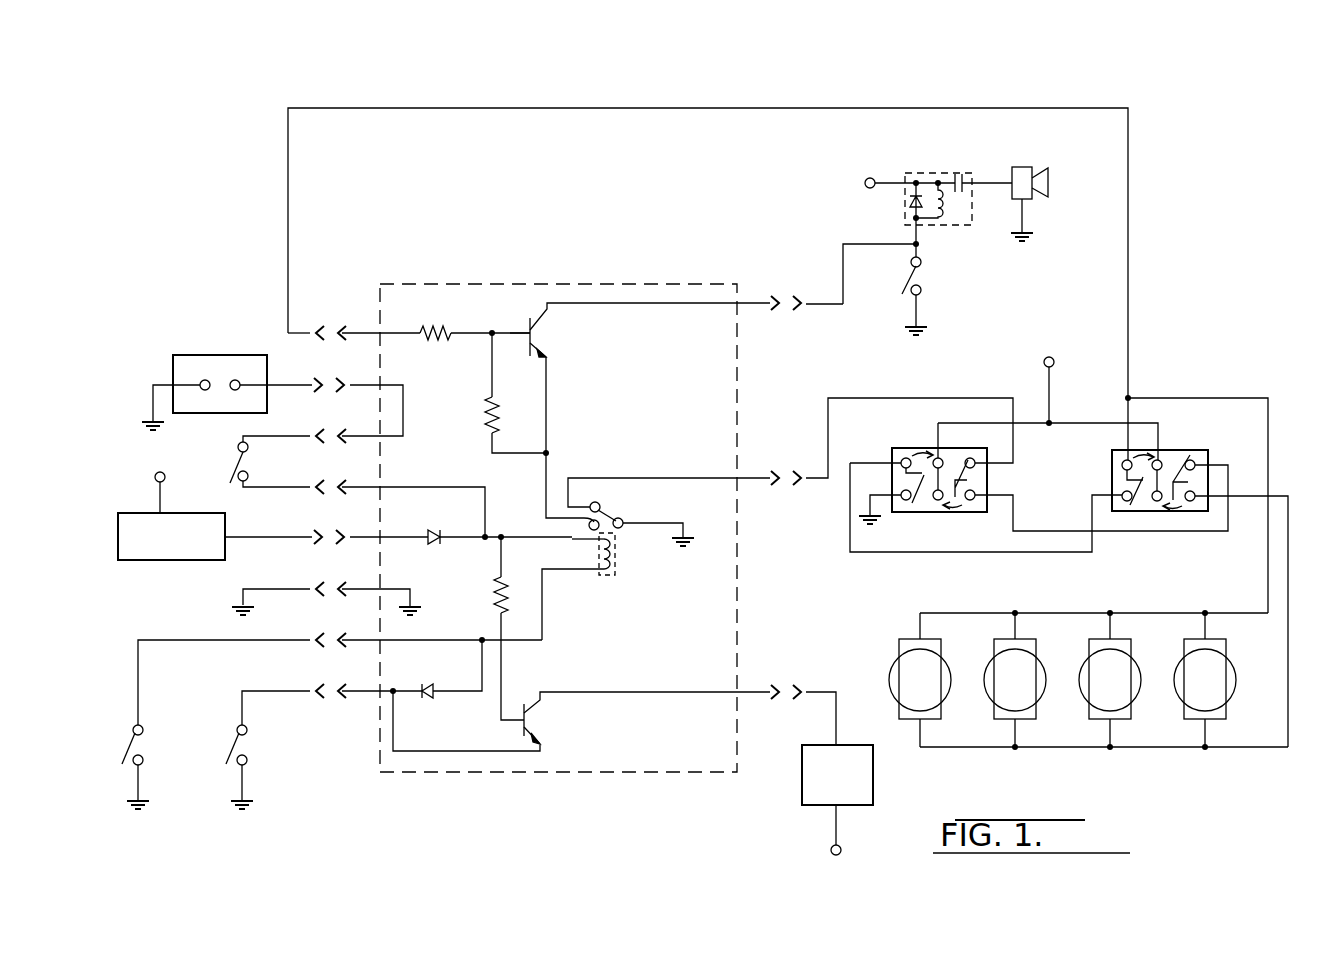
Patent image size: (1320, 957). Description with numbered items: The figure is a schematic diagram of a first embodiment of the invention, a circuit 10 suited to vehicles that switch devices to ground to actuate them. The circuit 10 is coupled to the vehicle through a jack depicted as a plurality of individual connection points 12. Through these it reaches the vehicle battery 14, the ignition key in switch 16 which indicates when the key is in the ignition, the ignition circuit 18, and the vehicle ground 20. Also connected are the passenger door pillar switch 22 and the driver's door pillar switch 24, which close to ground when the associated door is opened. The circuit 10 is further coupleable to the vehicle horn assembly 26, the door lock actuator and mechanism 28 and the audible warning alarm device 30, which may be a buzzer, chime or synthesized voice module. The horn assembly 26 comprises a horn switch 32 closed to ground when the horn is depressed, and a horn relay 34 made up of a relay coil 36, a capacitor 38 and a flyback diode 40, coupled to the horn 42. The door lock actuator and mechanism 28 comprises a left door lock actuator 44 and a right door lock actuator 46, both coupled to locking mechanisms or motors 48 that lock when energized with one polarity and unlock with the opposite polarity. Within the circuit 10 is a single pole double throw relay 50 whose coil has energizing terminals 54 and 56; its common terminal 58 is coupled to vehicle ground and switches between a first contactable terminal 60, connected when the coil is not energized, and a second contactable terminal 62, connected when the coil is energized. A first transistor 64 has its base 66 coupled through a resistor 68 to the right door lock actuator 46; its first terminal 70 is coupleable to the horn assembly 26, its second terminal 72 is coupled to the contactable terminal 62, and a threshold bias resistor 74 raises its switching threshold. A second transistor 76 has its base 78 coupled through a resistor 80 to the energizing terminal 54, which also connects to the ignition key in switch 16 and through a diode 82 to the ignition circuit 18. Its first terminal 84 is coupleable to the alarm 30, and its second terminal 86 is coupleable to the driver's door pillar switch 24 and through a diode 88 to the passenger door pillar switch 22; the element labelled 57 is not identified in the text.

The circuit 10 is at (588, 780).
The connection points 12 is at (332, 322).
The vehicle battery 14 is at (203, 354).
The ignition key in switch 16 is at (249, 476).
The ignition circuit 18 is at (225, 553).
The vehicle ground 20 is at (236, 600).
The passenger door pillar switch 22 is at (146, 765).
The driver's door pillar switch 24 is at (250, 762).
The vehicle horn assembly 26 is at (930, 200).
The door lock actuator and mechanism 28 is at (1047, 538).
The audible warning alarm device 30 is at (874, 770).
The horn switch 32 is at (924, 292).
The horn relay 34 is at (954, 228).
The relay coil 36 is at (950, 212).
The capacitor 38 is at (958, 170).
The flyback diode 40 is at (905, 204).
The horn 42 is at (1022, 166).
The left door lock actuator 44 is at (926, 514).
The right door lock actuator 46 is at (1145, 514).
The locking mechanisms or motors 48 is at (996, 676).
The single pole double throw relay 50 is at (612, 589).
The coil energizing terminal 54 is at (570, 545).
The coil energizing terminal 56 is at (572, 574).
The coil terminal 57 is at (606, 578).
The common terminal 58 is at (622, 516).
The first contactable terminal 60 is at (634, 492).
The second contactable terminal 62 is at (558, 520).
The first transistor 64 is at (627, 371).
The base 66 is at (514, 336).
The resistor 68 is at (436, 330).
The first terminal 70 is at (554, 315).
The second terminal 72 is at (554, 356).
The threshold bias resistor 74 is at (486, 420).
The second transistor 76 is at (611, 708).
The base 78 is at (500, 722).
The resistor 80 is at (494, 600).
The diode 82 is at (432, 530).
The first terminal 84 is at (542, 708).
The second terminal 86 is at (546, 745).
The diode 88 is at (430, 684).